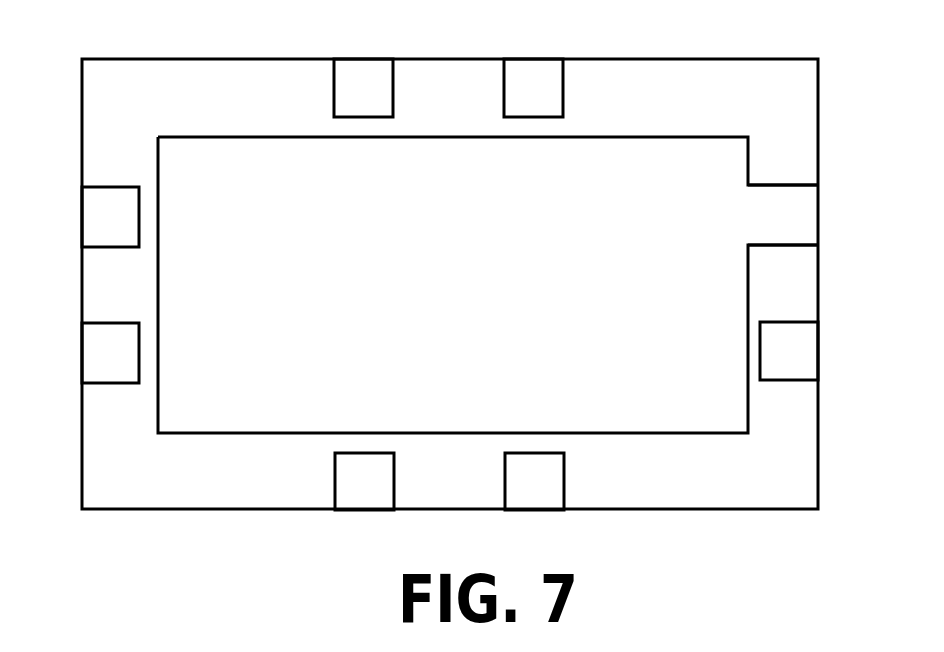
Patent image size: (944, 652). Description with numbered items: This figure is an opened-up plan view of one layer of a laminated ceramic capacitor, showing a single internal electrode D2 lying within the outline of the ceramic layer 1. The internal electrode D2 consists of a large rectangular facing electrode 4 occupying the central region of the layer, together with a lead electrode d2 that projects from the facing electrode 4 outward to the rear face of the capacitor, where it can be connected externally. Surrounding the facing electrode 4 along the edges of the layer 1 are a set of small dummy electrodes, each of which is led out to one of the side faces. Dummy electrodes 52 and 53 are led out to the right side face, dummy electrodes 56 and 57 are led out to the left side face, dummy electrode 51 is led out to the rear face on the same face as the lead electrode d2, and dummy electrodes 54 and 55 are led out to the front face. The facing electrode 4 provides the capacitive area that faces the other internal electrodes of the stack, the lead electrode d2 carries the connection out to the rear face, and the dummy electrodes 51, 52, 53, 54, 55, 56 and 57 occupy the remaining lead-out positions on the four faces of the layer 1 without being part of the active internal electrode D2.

The substrate 1 is at (765, 78).
The facing electrode 4 is at (249, 140).
The internal electrode D2 is at (203, 116).
The lead electrode d2 is at (806, 211).
The dummy electrode 51 is at (806, 348).
The dummy electrode 52 is at (531, 498).
The dummy electrode 53 is at (361, 498).
The dummy electrode 54 is at (93, 350).
The dummy electrode 55 is at (93, 213).
The dummy electrode 56 is at (360, 70).
The dummy electrode 57 is at (530, 70).